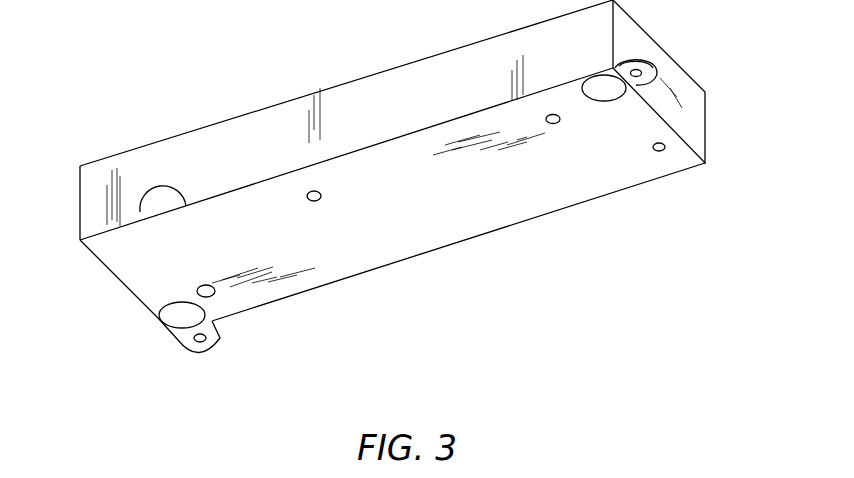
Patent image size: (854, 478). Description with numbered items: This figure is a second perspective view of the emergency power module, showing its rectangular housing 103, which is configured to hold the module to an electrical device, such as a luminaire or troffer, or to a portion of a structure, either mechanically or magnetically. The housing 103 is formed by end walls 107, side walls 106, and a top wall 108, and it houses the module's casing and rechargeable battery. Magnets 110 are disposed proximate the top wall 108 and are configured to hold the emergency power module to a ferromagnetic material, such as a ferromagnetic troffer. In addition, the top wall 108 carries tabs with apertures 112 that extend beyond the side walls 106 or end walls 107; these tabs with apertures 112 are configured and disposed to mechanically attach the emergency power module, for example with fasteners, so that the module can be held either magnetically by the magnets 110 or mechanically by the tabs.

The housing 103 is at (80, 166).
The side wall 106 is at (388, 123).
The end wall 107 is at (668, 77).
The top wall 108 is at (416, 221).
The magnet 110 is at (604, 102).
The tab with aperture 112 is at (222, 337).